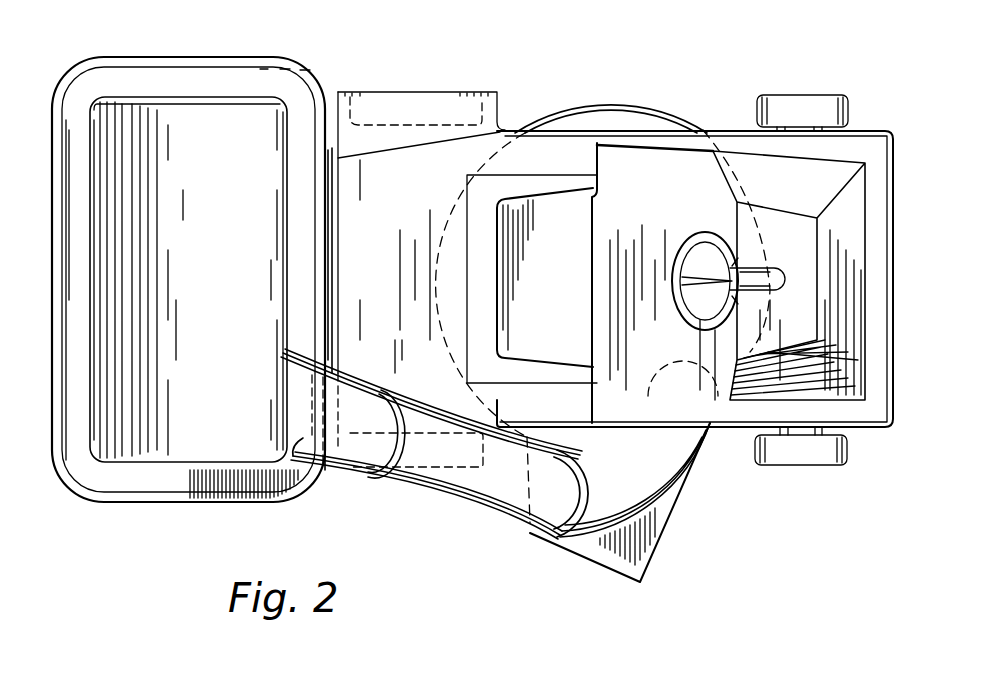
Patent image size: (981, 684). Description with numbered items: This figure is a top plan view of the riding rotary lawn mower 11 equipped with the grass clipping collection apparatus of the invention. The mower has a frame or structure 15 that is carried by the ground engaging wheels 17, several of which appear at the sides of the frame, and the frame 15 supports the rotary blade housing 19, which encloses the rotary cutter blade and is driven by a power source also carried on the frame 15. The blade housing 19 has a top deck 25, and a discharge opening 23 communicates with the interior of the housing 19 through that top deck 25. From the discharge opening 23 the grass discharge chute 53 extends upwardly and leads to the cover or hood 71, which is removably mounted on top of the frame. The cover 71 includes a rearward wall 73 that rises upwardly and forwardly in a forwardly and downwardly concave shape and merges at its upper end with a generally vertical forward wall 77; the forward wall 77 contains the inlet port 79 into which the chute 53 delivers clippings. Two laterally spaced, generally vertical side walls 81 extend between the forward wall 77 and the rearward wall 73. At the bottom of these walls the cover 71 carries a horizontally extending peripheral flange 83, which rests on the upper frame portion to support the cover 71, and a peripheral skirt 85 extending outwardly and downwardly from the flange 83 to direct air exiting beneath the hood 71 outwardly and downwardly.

The riding rotary lawn mower 11 is at (738, 100).
The frame or structure 15 is at (740, 145).
The ground engaging wheels 17 is at (437, 90).
The rotary blade housing 19 is at (530, 437).
The discharge opening 23 is at (530, 523).
The top deck 25 is at (570, 438).
The grass discharge chute 53 is at (427, 480).
The cover or hood 71 is at (195, 130).
The rearward wall 73 is at (113, 293).
The forward wall 77 is at (287, 218).
The inlet port 79 is at (303, 440).
The side walls 81 is at (155, 97).
The peripheral flange 83 is at (77, 97).
The peripheral skirt 85 is at (63, 470).